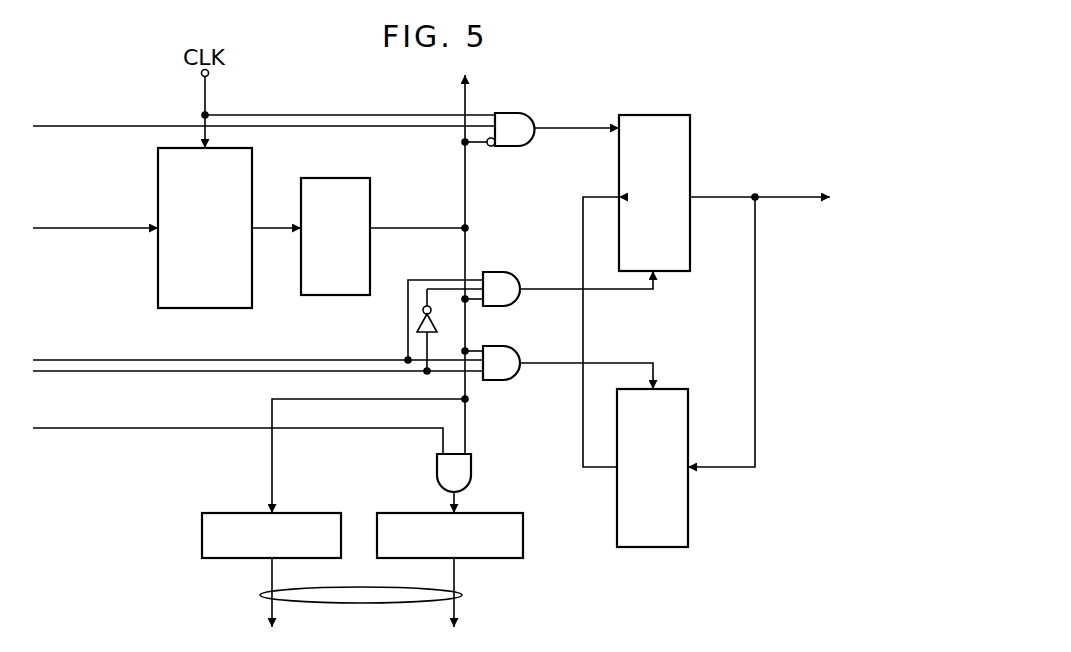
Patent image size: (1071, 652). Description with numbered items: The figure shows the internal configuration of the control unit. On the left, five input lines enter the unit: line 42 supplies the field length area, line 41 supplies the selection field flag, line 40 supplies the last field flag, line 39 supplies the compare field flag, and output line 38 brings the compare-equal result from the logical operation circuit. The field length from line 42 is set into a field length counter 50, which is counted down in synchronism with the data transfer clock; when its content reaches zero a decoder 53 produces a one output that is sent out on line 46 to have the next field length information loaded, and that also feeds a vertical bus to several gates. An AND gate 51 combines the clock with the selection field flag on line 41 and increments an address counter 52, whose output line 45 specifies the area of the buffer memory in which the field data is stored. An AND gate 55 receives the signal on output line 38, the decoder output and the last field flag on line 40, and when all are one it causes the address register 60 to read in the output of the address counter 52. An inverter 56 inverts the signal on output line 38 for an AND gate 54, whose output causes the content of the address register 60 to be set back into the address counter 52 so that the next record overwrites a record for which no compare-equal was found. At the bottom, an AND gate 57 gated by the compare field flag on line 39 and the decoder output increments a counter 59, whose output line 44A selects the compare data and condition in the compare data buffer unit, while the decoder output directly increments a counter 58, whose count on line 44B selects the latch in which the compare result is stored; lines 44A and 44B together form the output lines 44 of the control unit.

The output line 38 is at (93, 371).
The line 39 is at (92, 428).
The line 40 is at (94, 360).
The line 41 is at (93, 126).
The line 42 is at (91, 229).
The output lines 44 is at (370, 605).
The output line 44A is at (455, 578).
The line 44B is at (272, 580).
The output line 45 is at (779, 197).
The line 46 is at (465, 100).
The field length counter 50 is at (252, 178).
The AND gate 51 is at (511, 113).
The address counter 52 is at (650, 115).
The decoder 53 is at (370, 196).
The AND gate 54 is at (498, 272).
The AND gate 55 is at (498, 346).
The inverter 56 is at (418, 325).
The AND gate 57 is at (472, 469).
The counter 58 is at (202, 535).
The counter 59 is at (523, 532).
The address register 60 is at (688, 418).